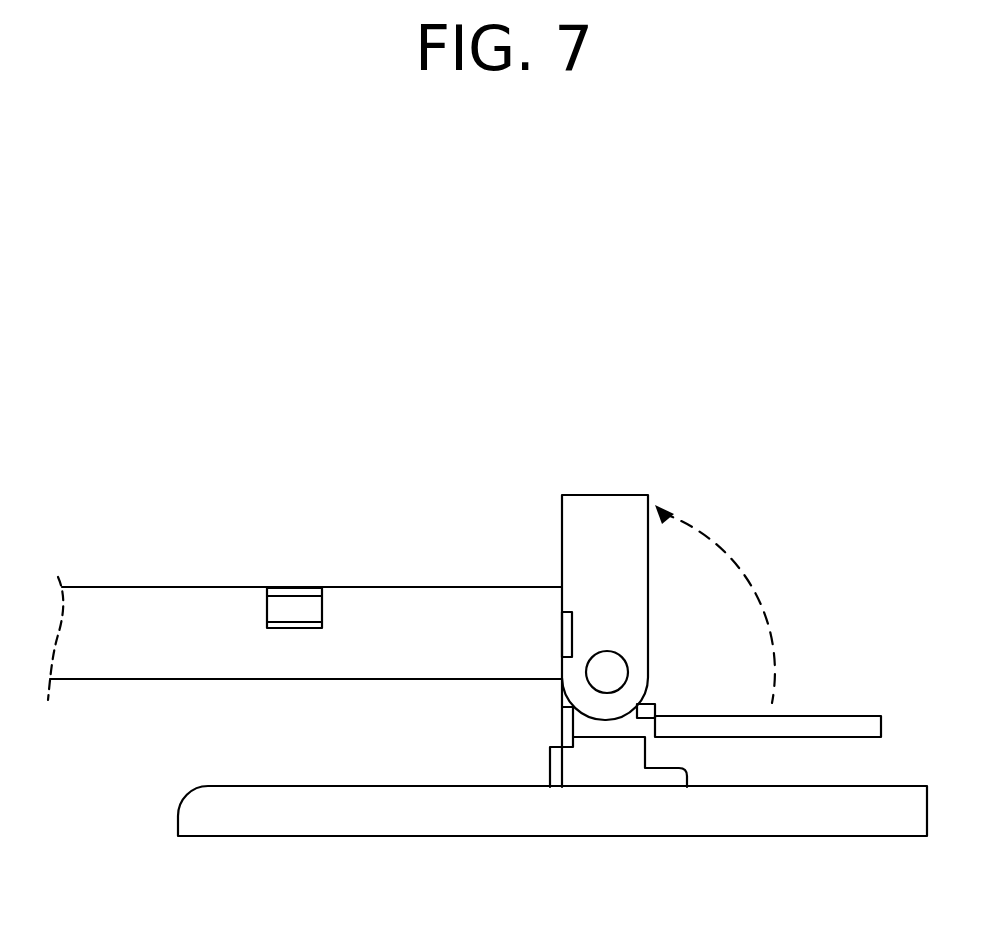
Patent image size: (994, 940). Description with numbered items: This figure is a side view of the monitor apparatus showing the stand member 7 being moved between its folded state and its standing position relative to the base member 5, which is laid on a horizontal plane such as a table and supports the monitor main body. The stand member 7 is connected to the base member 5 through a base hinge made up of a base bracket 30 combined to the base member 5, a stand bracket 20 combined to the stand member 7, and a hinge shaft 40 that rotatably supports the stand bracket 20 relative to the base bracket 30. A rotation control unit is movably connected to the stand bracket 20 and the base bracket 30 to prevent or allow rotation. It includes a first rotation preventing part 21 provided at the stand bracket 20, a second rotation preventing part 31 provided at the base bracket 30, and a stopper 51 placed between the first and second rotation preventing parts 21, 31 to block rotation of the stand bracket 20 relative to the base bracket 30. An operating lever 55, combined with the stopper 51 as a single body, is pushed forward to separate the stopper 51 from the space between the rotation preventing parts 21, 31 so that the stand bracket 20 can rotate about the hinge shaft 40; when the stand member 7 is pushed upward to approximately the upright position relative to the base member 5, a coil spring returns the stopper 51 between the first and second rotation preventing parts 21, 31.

The base member 5 is at (402, 838).
The stand member 7 is at (393, 587).
The stand bracket 20 is at (608, 505).
The first rotation preventing part 21 is at (652, 708).
The base bracket 30 is at (608, 775).
The second rotation preventing part 31 is at (568, 748).
The hinge shaft 40 is at (608, 671).
The stopper 51 is at (563, 722).
The operating lever 55 is at (856, 716).